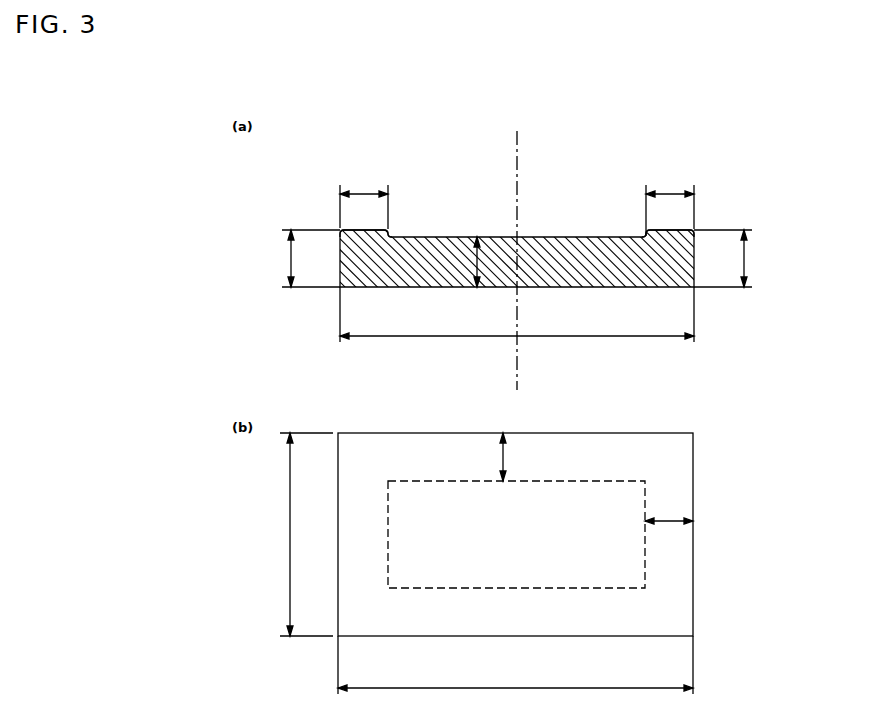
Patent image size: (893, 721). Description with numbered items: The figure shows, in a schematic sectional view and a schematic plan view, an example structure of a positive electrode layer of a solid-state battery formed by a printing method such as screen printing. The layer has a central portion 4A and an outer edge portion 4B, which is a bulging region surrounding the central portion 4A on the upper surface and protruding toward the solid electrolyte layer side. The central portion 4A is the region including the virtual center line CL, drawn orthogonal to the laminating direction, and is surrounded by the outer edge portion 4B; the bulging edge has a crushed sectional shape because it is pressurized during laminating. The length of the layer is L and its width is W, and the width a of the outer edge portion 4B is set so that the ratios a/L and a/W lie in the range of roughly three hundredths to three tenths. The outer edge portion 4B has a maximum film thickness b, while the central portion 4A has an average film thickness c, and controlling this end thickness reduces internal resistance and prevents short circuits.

The central portion 4A is at (567, 237).
The outer edge portion 4B is at (376, 229).
The virtual center line CL is at (516, 251).
The width of the outer edge portion a is at (517, 348).
The maximum film thickness b is at (516, 258).
The average film thickness c is at (469, 262).
The length of the positive electrode layer L is at (516, 501).
The width of the positive electrode layer W is at (301, 534).